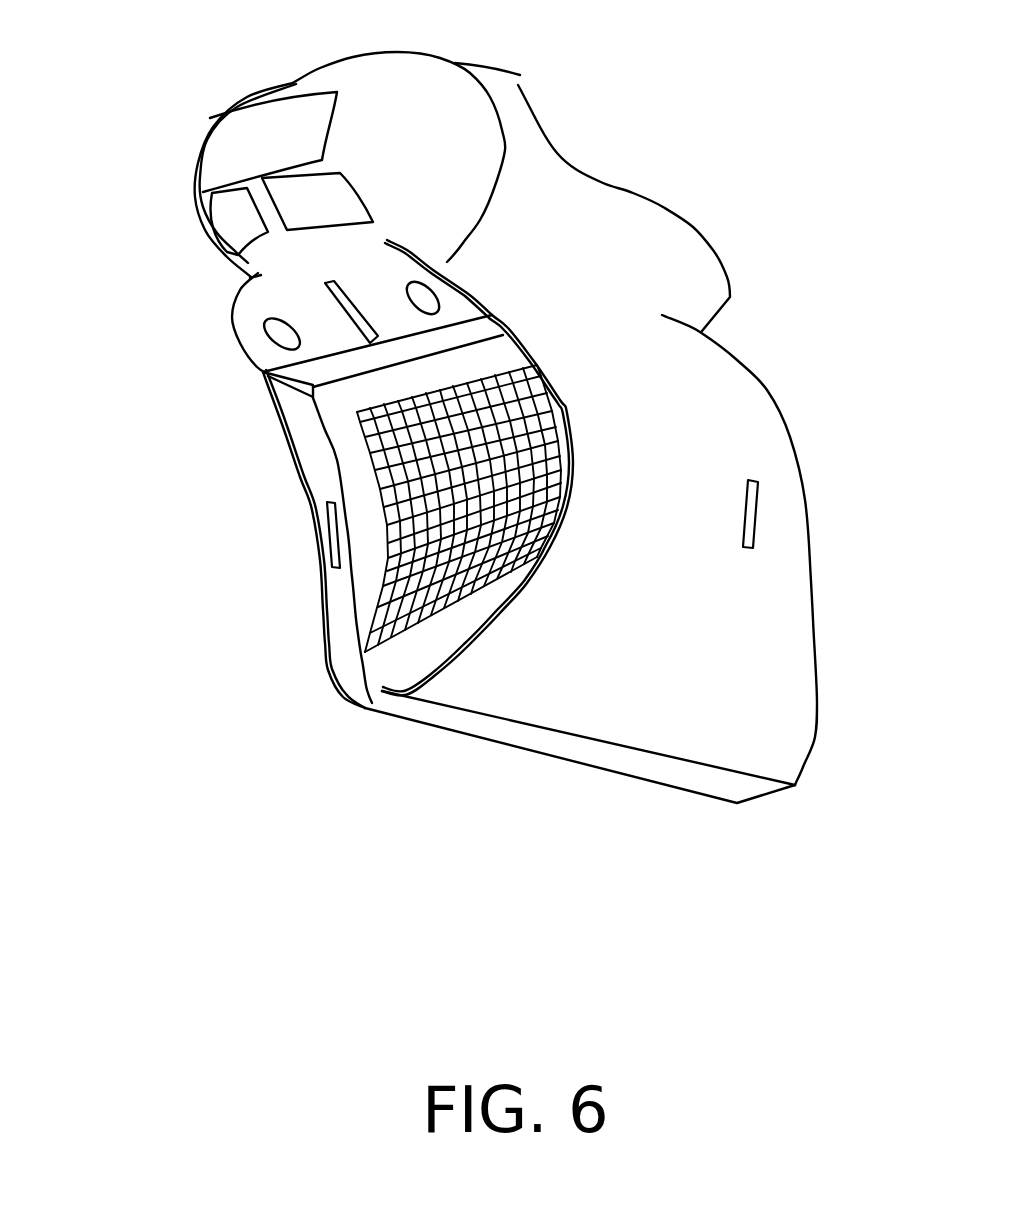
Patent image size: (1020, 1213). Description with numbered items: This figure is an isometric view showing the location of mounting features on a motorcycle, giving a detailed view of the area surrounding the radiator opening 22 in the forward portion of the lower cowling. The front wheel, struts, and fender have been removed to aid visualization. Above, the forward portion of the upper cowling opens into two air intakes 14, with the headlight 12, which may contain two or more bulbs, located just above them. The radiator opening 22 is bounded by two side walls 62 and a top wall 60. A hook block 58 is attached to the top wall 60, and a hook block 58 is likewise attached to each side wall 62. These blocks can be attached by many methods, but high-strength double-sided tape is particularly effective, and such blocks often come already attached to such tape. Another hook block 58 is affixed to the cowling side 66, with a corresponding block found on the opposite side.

The headlight 12 is at (262, 140).
The air intakes 14 is at (238, 223).
The radiator opening 22 is at (372, 603).
The hook block 58 is at (347, 313).
The top wall 60 is at (353, 363).
The side walls 62 is at (340, 613).
The cowling side 66 is at (640, 627).